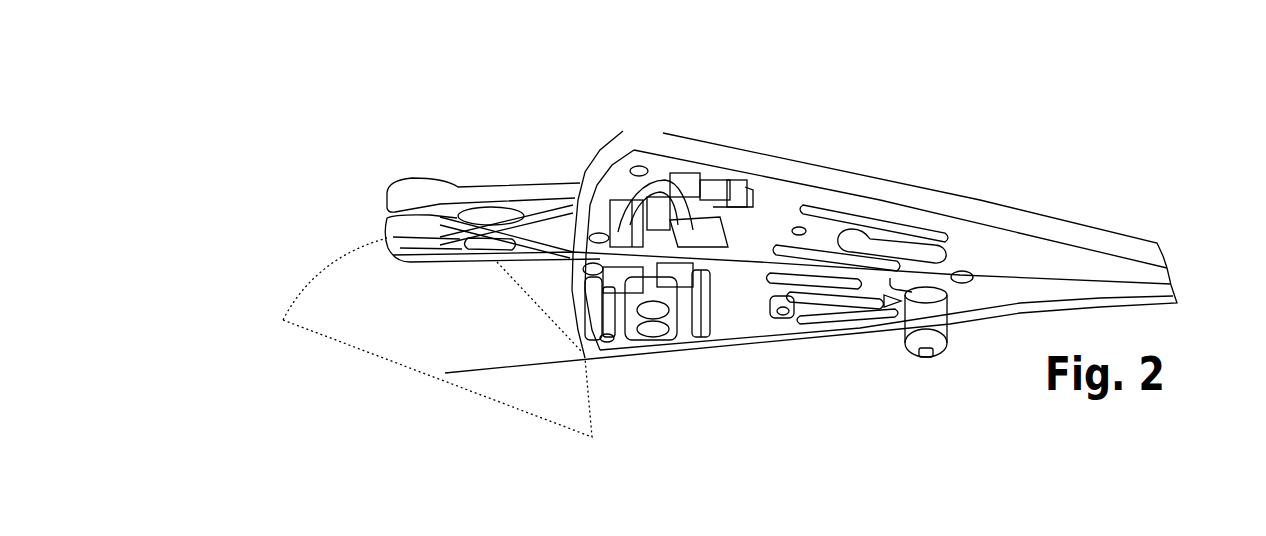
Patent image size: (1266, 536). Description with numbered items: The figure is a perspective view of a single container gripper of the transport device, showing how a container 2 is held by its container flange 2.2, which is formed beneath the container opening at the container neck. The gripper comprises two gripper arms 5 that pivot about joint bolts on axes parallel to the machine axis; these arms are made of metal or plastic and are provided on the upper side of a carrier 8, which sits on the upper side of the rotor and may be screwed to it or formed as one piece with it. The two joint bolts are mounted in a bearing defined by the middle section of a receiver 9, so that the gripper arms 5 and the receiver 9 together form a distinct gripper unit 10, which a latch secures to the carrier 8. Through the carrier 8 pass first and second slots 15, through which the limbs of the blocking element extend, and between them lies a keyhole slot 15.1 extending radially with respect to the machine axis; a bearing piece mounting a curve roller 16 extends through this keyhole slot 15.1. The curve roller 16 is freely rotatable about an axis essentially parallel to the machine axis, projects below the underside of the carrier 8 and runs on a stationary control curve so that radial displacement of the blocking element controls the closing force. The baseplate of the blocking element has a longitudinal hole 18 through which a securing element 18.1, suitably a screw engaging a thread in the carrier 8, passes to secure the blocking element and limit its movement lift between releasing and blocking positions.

The container 2 is at (345, 290).
The container flange 2.2 is at (392, 190).
The gripper arms 5 is at (538, 210).
The carrier 8 is at (1088, 225).
The receiver 9 is at (675, 320).
The gripper unit 10 is at (468, 162).
The first and second slots 15 is at (803, 210).
The keyhole slot 15.1 is at (857, 240).
The curve roller 16 is at (945, 353).
The longitudinal hole 18 is at (782, 183).
The securing element 18.1 is at (797, 323).